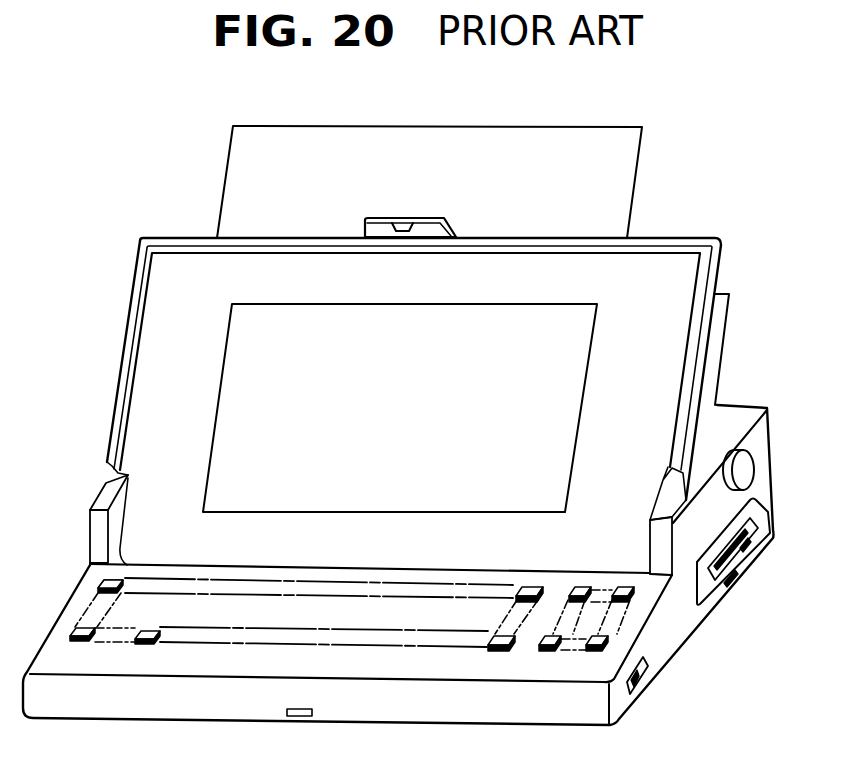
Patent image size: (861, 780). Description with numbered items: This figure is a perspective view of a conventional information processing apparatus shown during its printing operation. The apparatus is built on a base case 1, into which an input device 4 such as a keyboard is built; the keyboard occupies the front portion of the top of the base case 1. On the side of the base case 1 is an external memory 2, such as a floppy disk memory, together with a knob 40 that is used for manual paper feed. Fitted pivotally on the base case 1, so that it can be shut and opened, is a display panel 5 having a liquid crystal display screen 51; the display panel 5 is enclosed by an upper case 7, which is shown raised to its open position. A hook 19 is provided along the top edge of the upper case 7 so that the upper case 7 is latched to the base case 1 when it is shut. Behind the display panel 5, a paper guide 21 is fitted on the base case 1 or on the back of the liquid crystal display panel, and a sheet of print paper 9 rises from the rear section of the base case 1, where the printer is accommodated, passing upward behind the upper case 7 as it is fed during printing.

The base case 1 is at (671, 643).
The external memory 2 is at (733, 566).
The input device 4 is at (78, 628).
The display panel 5 is at (227, 343).
The upper case 7 is at (119, 378).
The sheet of print paper 9 is at (633, 188).
The hook 19 is at (405, 218).
The paper guide 21 is at (725, 330).
The knob 40 is at (756, 465).
The liquid crystal display screen 51 is at (452, 485).